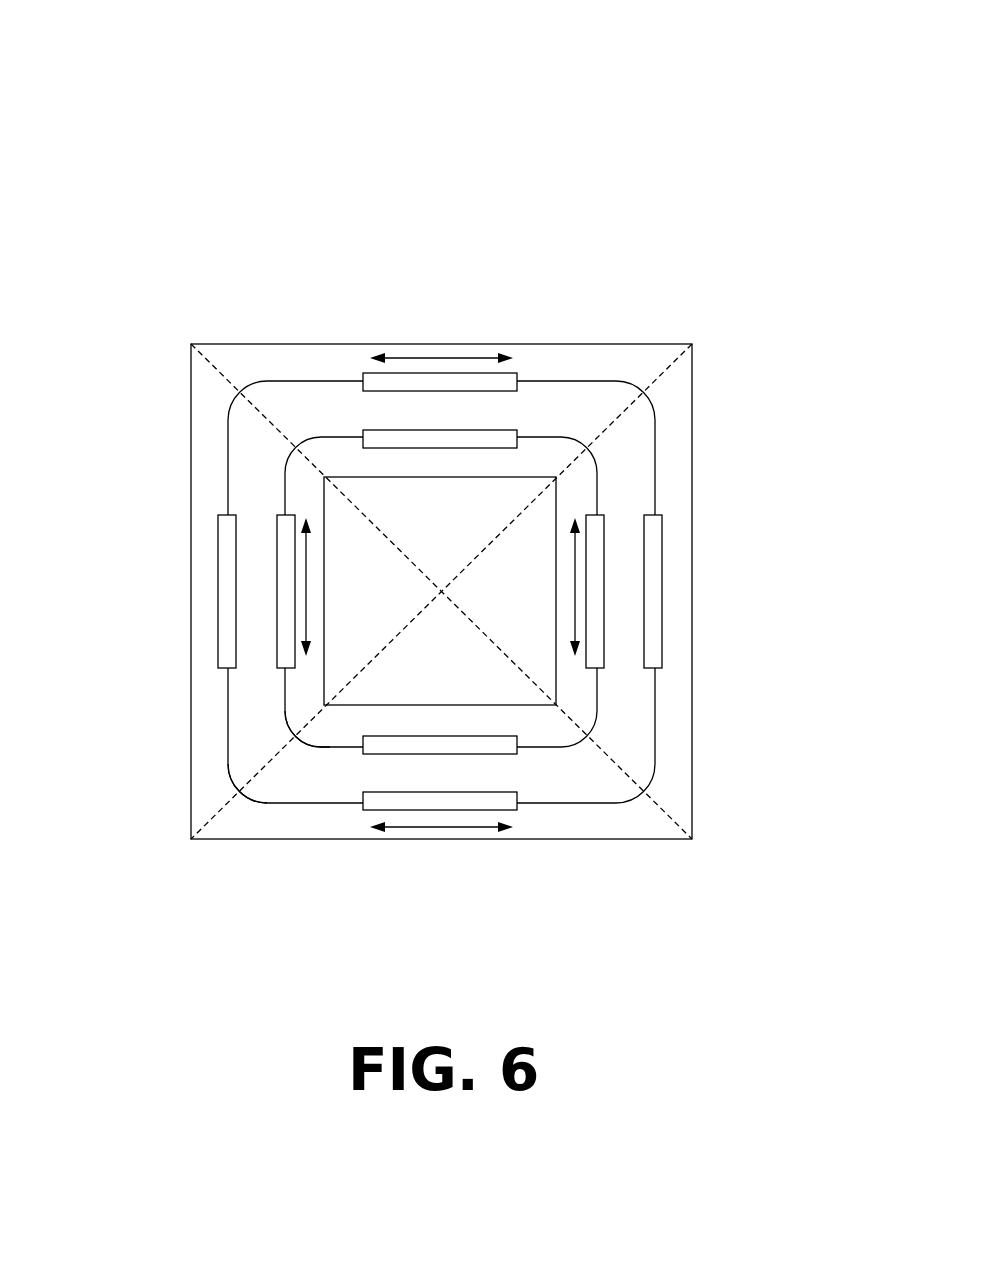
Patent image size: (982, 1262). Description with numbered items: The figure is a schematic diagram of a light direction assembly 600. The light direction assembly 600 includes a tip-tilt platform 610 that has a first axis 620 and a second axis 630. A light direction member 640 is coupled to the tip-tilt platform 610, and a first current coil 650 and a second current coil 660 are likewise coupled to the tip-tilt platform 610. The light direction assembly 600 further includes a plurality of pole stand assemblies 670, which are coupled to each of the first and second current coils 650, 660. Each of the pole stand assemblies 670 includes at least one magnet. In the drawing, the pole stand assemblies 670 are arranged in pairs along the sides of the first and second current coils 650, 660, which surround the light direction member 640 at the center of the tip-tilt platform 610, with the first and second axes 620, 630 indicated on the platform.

The light direction assembly 600 is at (302, 110).
The tip-tilt platform 610 is at (633, 823).
The first axis 620 is at (230, 383).
The second axis 630 is at (656, 382).
The light direction member 640 is at (466, 694).
The first current coil 650 is at (327, 747).
The second current coil 660 is at (228, 762).
The pole stand assemblies 670 is at (517, 440).